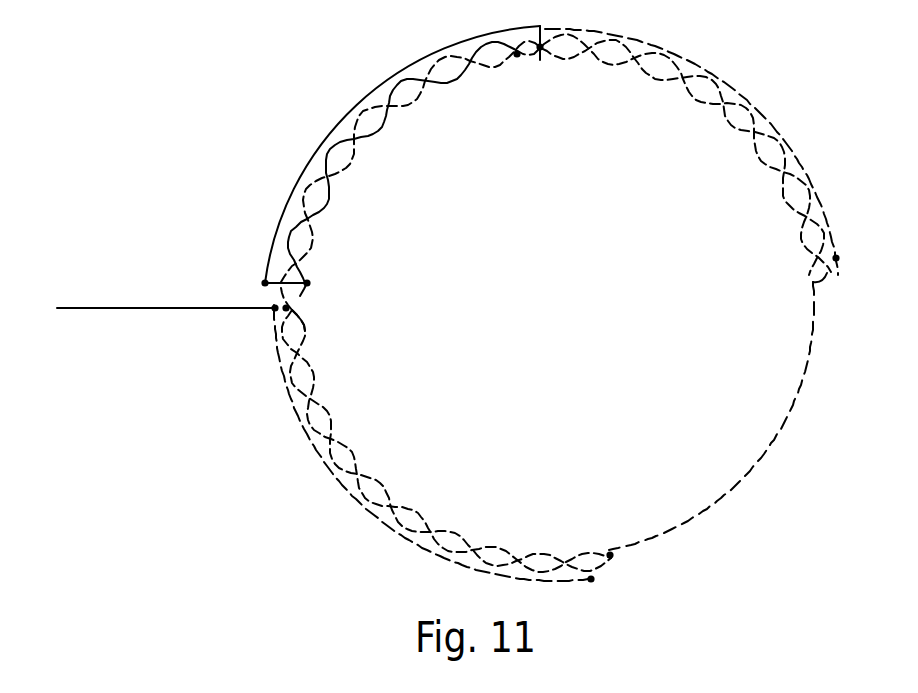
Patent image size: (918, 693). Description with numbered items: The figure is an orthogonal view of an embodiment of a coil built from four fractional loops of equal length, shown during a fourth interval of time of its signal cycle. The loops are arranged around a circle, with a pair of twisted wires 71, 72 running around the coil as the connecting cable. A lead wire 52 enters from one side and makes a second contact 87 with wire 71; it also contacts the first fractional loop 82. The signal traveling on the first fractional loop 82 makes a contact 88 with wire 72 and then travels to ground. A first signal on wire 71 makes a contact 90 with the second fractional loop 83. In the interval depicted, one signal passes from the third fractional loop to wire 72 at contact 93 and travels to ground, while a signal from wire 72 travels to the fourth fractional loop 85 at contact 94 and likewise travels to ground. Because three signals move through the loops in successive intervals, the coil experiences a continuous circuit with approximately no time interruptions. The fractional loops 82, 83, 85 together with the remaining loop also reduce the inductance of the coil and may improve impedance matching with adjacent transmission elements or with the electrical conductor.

The lead wire 52 is at (145, 309).
The wire 71 is at (305, 340).
The wire 72 is at (304, 292).
The first fractional loop 82 is at (380, 522).
The second fractional loop 83 is at (733, 490).
The fourth fractional loop 85 is at (392, 76).
The second contact 87 is at (773, 124).
The contact 88 is at (591, 579).
The contact 90 is at (610, 555).
The contact 93 is at (517, 56).
The contact 94 is at (540, 60).